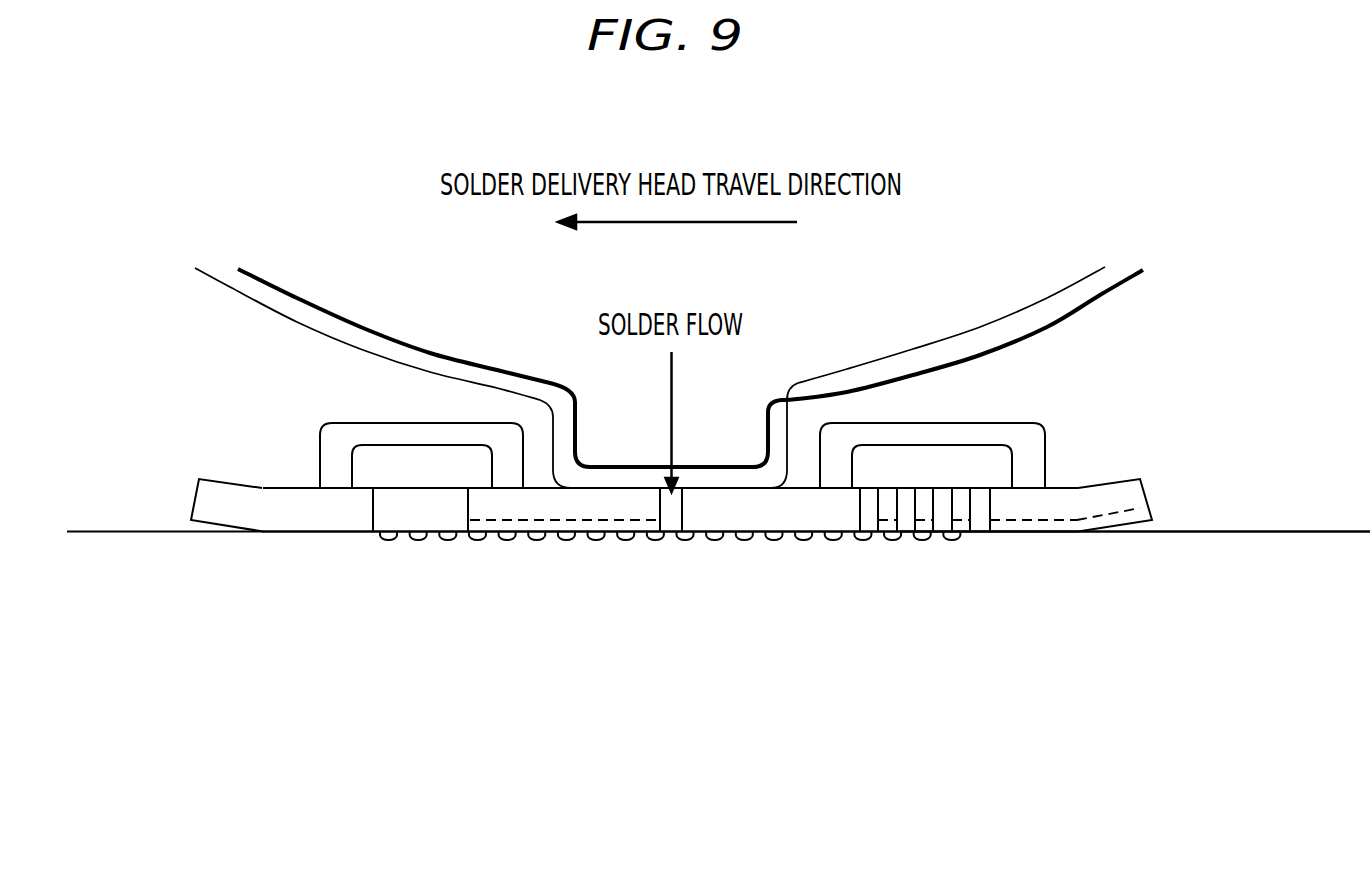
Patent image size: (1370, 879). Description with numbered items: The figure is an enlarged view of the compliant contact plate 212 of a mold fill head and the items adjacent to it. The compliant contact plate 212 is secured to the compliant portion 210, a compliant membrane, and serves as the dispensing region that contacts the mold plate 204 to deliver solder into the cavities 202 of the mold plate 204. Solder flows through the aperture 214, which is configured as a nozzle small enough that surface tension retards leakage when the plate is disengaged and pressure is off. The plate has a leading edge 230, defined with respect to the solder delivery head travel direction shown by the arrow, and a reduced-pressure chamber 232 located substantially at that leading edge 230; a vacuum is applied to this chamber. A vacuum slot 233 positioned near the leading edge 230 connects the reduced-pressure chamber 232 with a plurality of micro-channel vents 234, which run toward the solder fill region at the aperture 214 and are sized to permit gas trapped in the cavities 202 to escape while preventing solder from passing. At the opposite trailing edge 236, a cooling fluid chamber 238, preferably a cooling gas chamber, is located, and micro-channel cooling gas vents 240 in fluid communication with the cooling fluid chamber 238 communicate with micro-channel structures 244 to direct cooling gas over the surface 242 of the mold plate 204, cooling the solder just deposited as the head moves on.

The cavities 202 is at (418, 540).
The mold plate 204 is at (1266, 600).
The compliant portion 210 is at (1097, 294).
The compliant contact plate 212 is at (1108, 480).
The aperture 214 is at (682, 506).
The leading edge 230 is at (192, 503).
The reduced-pressure chamber 232 is at (380, 443).
The vacuum slot 233 is at (439, 521).
The micro-channel vents 234 is at (613, 522).
The trailing edge 236 is at (1147, 496).
The cooling fluid chamber 238 is at (950, 443).
The micro-channel cooling gas vents 240 is at (947, 493).
The surface 242 is at (1250, 531).
The micro-channel structures 244 is at (1015, 523).